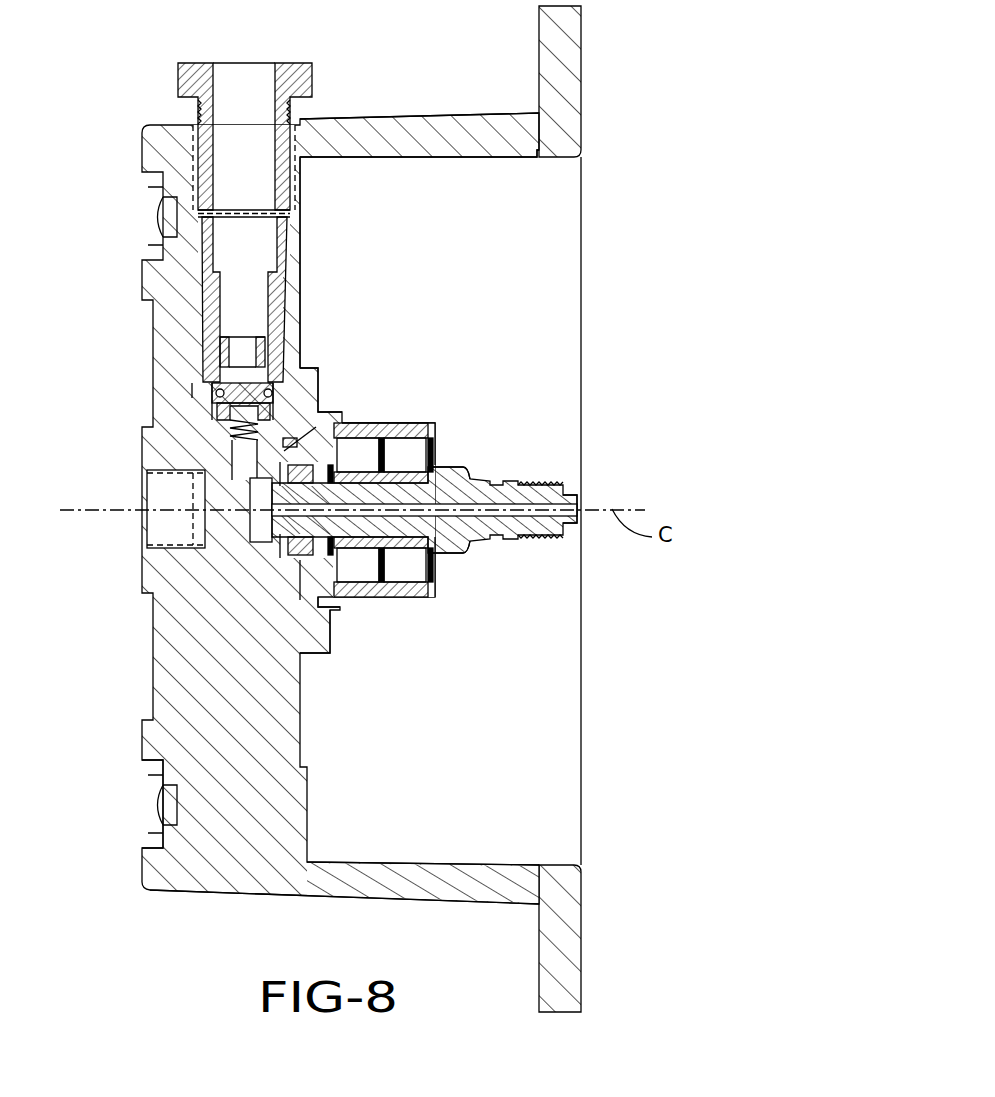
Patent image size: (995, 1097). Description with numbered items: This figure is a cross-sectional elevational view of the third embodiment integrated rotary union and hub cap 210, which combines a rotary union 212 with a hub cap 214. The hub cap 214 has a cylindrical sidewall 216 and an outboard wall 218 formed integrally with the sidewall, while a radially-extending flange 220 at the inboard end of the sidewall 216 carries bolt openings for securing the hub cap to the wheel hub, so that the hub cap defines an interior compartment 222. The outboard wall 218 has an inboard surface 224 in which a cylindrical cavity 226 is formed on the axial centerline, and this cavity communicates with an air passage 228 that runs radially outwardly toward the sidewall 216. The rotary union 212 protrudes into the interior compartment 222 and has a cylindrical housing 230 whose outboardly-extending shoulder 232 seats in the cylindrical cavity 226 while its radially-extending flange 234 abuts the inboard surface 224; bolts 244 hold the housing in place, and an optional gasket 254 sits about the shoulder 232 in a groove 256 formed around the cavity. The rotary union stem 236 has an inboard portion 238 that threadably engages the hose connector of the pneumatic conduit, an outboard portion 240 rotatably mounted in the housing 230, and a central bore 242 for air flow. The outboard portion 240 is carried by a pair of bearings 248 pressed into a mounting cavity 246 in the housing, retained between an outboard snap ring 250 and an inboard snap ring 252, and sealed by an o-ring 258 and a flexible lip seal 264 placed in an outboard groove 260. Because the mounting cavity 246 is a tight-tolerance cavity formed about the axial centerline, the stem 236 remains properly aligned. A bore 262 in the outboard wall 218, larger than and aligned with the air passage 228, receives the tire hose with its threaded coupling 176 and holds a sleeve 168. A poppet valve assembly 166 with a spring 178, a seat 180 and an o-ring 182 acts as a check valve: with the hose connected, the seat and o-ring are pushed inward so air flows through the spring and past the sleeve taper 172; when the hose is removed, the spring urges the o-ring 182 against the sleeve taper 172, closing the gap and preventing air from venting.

The poppet valve assembly 166 is at (190, 398).
The sleeve 168 is at (212, 310).
The sleeve taper 172 is at (222, 372).
The threaded coupling 176 is at (300, 65).
The spring 178 is at (245, 440).
The seat 180 is at (228, 386).
The o-ring 182 is at (236, 396).
The third embodiment integrated rotary union and hub cap 210 is at (107, 182).
The rotary union 212 is at (453, 442).
The hub cap 214 is at (135, 572).
The cylindrical sidewall 216 is at (425, 135).
The outboard wall 218 is at (145, 750).
The radially-extending flange 220 is at (556, 50).
The interior compartment 222 is at (432, 212).
The inboard surface 224 is at (302, 712).
The cylindrical cavity 226 is at (292, 548).
The air passage 228 is at (268, 537).
The cylindrical housing 230 is at (432, 428).
The outboardly-extending shoulder 232 is at (300, 563).
The radially-extending flange 234 is at (315, 640).
The stem 236 is at (456, 468).
The inboard portion 238 is at (510, 485).
The outboard portion 240 is at (262, 487).
The central bore 242 is at (550, 505).
The bolts 244 is at (328, 622).
The mounting cavity 246 is at (400, 450).
The bearings 248 is at (405, 578).
The outboard snap ring 250 is at (330, 470).
The inboard snap ring 252 is at (433, 582).
The gasket 254 is at (240, 428).
The groove 256 is at (305, 436).
The o-ring 258 is at (280, 540).
The outboard groove 260 is at (290, 443).
The bore 262 is at (292, 286).
The flexible lip seal 264 is at (300, 578).